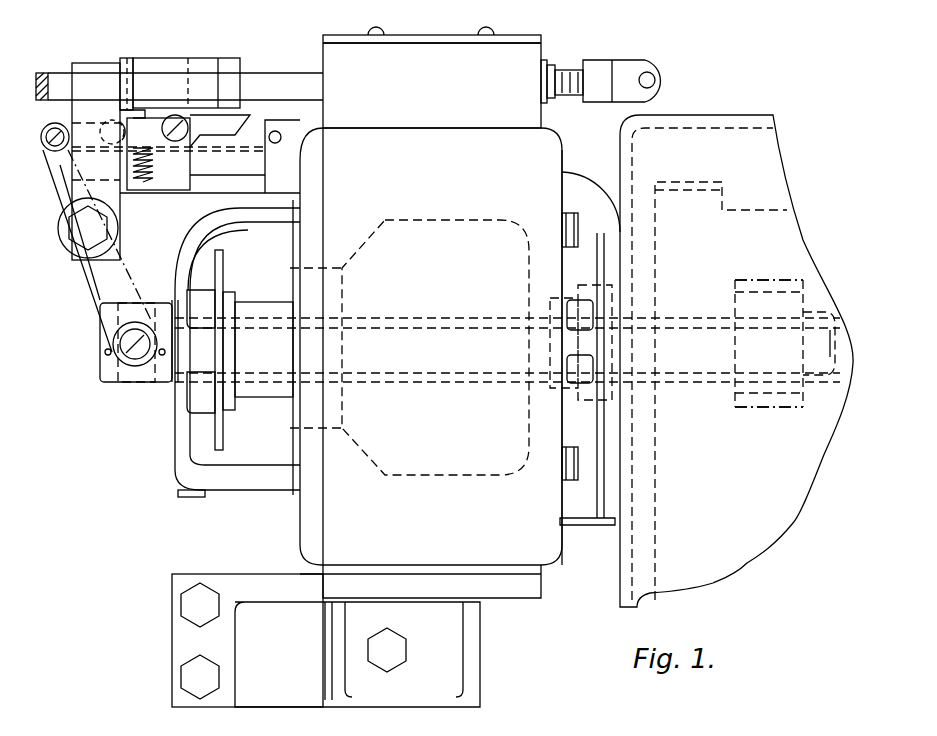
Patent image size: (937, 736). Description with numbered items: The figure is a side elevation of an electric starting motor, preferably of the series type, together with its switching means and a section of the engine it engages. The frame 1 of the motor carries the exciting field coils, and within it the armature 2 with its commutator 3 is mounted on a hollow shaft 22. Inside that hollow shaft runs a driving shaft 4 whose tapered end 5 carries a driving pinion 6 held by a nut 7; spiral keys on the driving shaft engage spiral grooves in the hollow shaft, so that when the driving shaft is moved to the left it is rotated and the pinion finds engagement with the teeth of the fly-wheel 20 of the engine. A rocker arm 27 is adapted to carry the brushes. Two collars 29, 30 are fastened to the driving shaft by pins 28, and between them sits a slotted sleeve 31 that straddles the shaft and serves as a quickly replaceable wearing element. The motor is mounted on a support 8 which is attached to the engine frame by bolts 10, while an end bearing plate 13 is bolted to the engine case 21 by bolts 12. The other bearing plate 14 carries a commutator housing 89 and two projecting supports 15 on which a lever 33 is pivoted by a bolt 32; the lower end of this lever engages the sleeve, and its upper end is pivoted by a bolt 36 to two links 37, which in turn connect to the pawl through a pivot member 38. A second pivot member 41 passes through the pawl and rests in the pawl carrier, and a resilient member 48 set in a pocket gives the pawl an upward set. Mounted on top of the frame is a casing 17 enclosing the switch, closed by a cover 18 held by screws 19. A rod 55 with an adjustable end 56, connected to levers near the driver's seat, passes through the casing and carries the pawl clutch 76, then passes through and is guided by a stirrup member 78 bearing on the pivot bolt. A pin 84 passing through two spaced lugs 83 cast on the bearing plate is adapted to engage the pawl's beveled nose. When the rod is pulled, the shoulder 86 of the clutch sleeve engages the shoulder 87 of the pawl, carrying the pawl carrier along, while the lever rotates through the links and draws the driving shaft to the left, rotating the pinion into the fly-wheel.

The frame of the electric motor 1 is at (431, 363).
The armature 2 is at (409, 347).
The commutator 3 is at (273, 302).
The driving shaft 4 is at (507, 361).
The tapered end 5 is at (750, 364).
The driving pinion 6 is at (770, 408).
The nut 7 is at (812, 376).
The support 8 is at (357, 654).
The bolts 10 is at (214, 672).
The bolts 12 is at (576, 468).
The end bearing plate 13 is at (560, 176).
The bearing plate 14 is at (320, 200).
The projecting supports 15 is at (220, 352).
The casing 17 is at (432, 81).
The cover 18 is at (421, 43).
The screws 19 is at (378, 33).
The fly-wheel 20 is at (721, 391).
The engine case 21 is at (688, 116).
The hollow shaft 22 is at (460, 318).
The rocker arm 27 is at (223, 442).
The pins 28 is at (135, 380).
The collar 29 is at (168, 385).
The collar 30 is at (100, 380).
The sleeve 31 is at (150, 300).
The bolt 32 is at (82, 246).
The lever 33 is at (95, 312).
The bolt 36 is at (58, 150).
The links 37 is at (68, 128).
The pivot member 38 is at (116, 128).
The pivot member 41 is at (178, 131).
The resilient member 48 is at (153, 168).
The rod 55 is at (179, 85).
The adjustable end 56 is at (630, 62).
The pawl clutch 76 is at (178, 65).
The stirrup member 78 is at (76, 66).
The spaced lugs 83 is at (186, 156).
The pin 84 is at (276, 131).
The shoulder 86 is at (130, 58).
The shoulder 87 is at (135, 110).
The commutator housing 89 is at (236, 232).